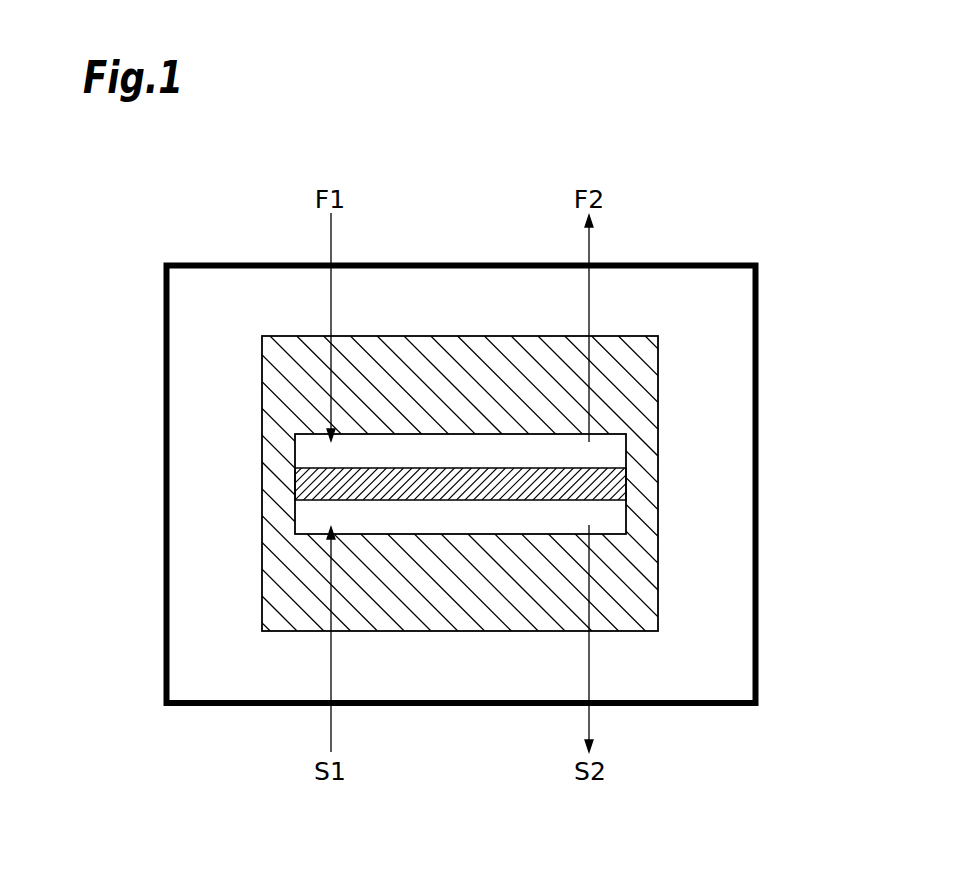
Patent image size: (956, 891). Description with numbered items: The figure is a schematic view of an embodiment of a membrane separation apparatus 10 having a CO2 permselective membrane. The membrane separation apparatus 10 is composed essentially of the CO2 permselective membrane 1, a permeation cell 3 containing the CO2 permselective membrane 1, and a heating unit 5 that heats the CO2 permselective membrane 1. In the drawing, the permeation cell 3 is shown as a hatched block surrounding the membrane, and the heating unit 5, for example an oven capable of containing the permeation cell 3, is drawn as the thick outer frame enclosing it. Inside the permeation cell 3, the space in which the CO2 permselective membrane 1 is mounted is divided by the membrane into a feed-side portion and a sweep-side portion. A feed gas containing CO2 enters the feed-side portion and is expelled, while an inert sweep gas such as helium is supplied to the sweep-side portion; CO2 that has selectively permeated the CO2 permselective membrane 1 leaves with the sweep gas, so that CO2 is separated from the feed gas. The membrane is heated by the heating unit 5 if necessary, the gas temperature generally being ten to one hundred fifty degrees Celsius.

The membrane separation apparatus 10 is at (700, 193).
The heating unit 5 is at (759, 300).
The permeation cell 3 is at (636, 338).
The CO2 permselective membrane 1 is at (295, 478).